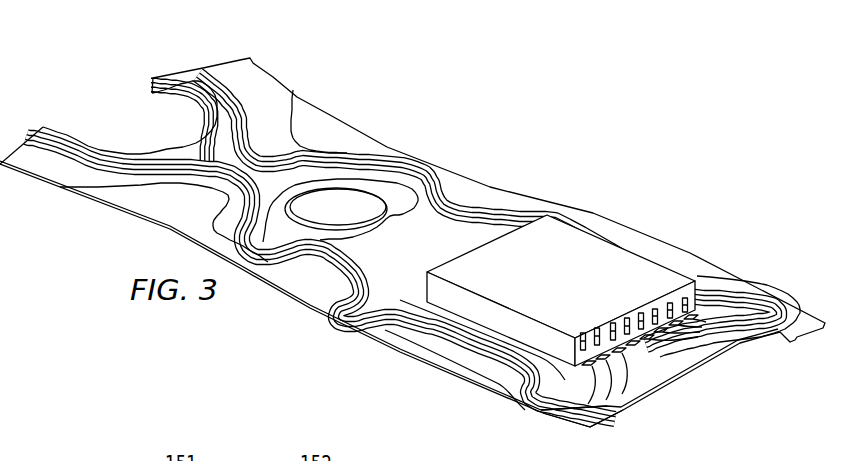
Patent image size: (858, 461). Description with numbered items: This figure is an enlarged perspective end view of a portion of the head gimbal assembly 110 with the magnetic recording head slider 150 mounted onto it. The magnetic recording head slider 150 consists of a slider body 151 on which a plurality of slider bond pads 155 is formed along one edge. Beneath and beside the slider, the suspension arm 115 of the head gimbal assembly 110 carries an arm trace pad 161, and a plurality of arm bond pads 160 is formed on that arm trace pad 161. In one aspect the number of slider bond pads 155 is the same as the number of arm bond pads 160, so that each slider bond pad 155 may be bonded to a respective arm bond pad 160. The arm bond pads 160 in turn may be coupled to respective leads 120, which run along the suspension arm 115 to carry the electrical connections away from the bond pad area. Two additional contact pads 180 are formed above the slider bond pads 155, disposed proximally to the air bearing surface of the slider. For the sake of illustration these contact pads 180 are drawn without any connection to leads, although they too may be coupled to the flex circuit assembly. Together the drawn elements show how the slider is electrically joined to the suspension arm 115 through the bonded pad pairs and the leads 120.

The head gimbal assembly 110 is at (528, 156).
The suspension arm 115 is at (303, 295).
The leads 120 is at (545, 405).
The magnetic recording head slider 150 is at (551, 268).
The slider body 151 is at (497, 262).
The slider bond pads 155 is at (688, 305).
The arm bond pads 160 is at (683, 363).
The arm trace pad 161 is at (653, 377).
The contact pads 180 is at (585, 333).